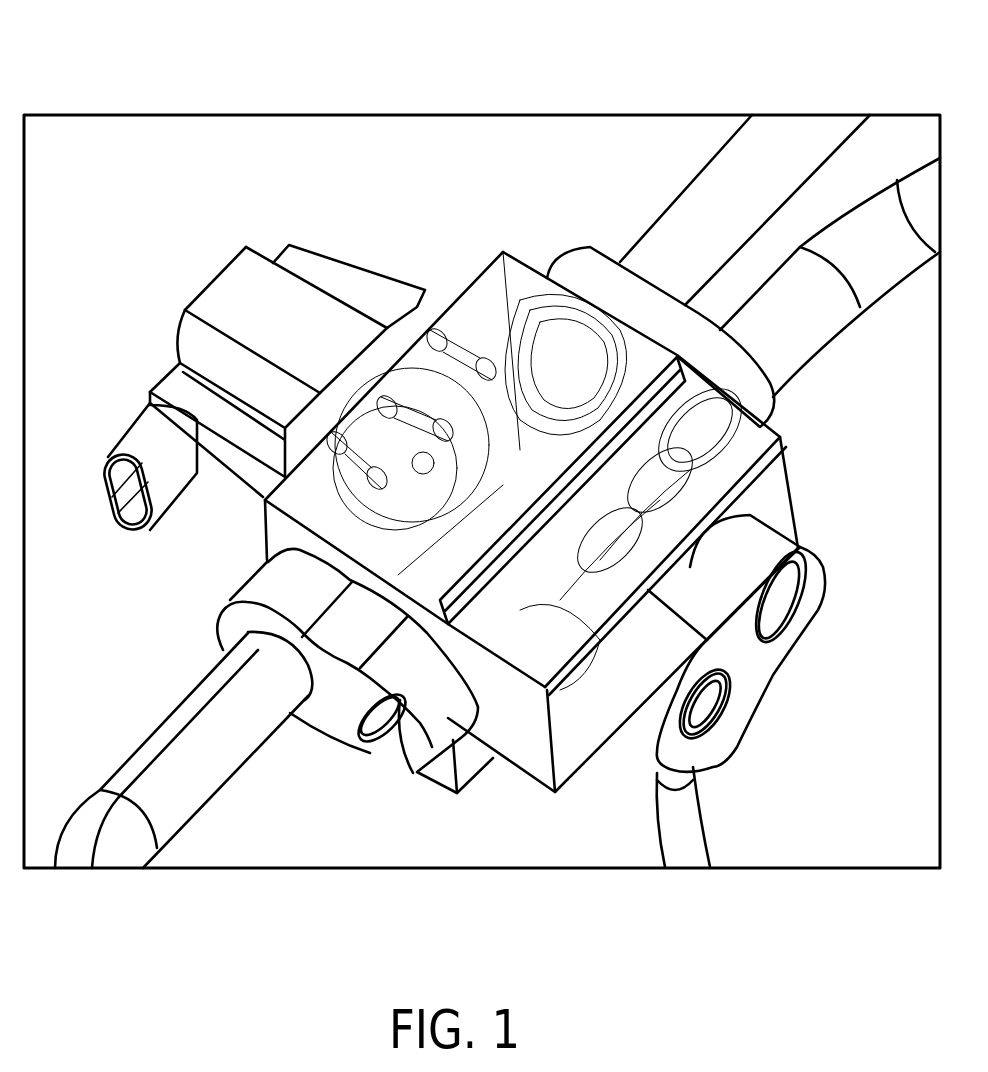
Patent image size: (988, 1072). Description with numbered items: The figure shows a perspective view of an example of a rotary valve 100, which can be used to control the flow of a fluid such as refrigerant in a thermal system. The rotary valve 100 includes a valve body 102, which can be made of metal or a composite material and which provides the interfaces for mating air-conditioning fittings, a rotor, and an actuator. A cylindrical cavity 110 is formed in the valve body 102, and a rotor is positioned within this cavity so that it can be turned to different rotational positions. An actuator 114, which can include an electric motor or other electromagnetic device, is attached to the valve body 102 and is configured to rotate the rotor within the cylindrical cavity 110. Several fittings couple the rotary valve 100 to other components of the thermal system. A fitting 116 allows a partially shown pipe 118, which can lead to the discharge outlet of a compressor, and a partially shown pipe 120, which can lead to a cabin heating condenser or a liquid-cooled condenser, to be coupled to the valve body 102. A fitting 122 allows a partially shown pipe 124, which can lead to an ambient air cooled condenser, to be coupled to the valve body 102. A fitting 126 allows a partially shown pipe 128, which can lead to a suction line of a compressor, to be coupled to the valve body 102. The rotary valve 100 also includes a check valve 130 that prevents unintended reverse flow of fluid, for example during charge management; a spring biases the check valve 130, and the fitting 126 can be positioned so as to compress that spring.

The rotary valve 100 is at (502, 43).
The valve body 102 is at (792, 468).
The cylindrical cavity 110 is at (503, 501).
The actuator 114 is at (317, 258).
The fitting 116 is at (563, 268).
The pipe 118 is at (722, 142).
The pipe 120 is at (850, 205).
The fitting 122 is at (447, 717).
The pipe 124 is at (163, 745).
The fitting 126 is at (798, 552).
The pipe 128 is at (690, 842).
The check valve 130 is at (565, 600).